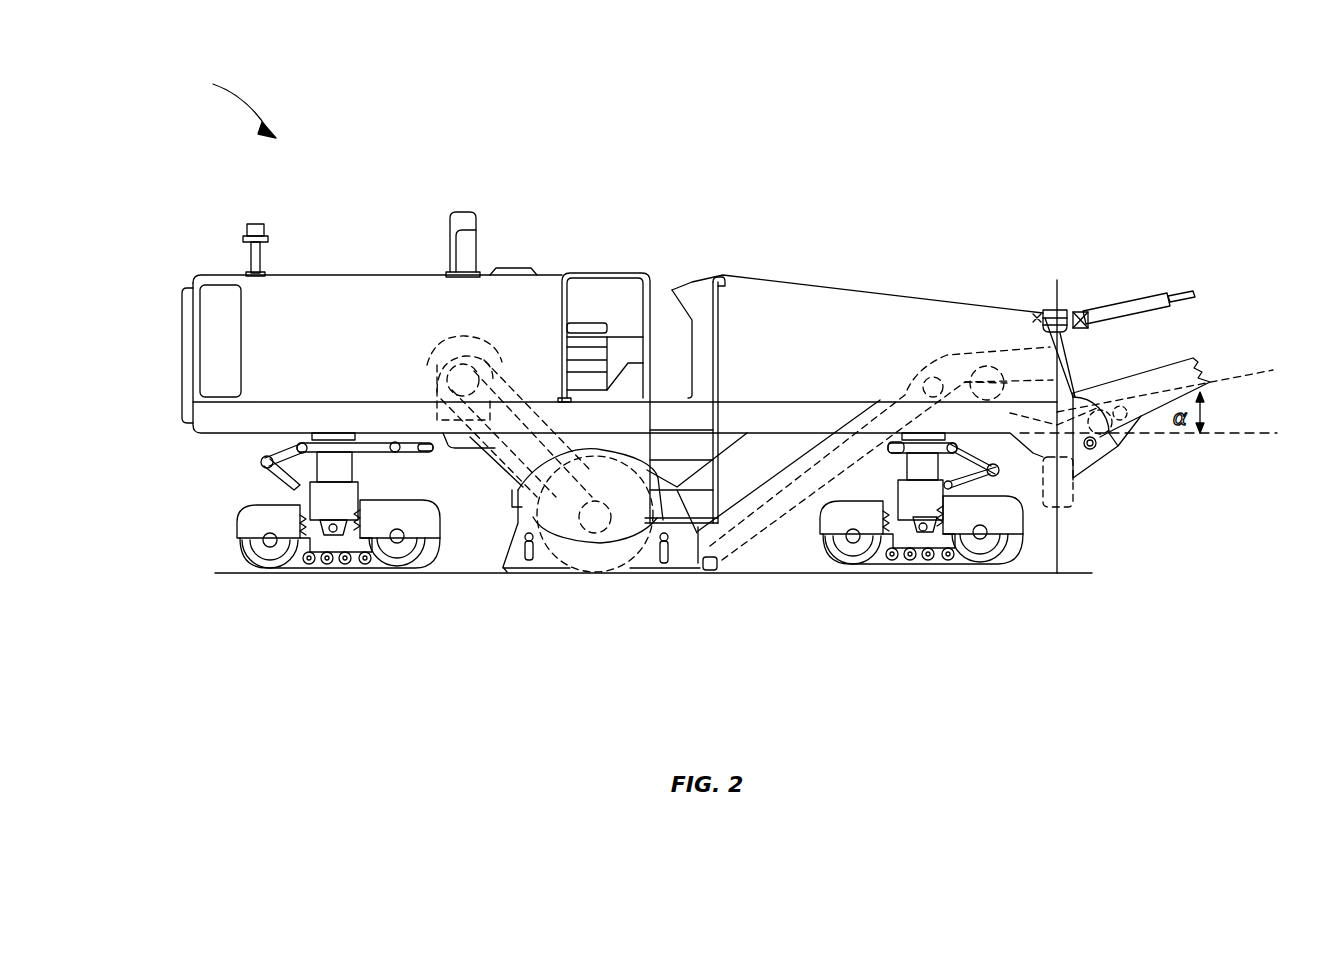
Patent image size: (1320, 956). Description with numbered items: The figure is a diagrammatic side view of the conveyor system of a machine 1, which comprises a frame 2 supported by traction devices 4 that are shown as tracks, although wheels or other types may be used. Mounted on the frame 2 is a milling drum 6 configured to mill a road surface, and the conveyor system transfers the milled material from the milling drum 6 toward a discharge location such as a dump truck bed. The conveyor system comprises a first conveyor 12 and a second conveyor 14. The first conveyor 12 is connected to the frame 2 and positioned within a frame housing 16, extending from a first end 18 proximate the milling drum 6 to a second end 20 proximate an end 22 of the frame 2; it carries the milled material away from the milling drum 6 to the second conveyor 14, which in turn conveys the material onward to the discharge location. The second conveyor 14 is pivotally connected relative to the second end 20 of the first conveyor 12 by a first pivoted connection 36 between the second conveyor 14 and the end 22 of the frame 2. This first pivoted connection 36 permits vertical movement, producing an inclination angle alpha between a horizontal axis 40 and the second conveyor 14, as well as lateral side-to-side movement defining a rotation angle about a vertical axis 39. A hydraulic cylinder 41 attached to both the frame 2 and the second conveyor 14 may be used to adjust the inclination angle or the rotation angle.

The machine 1 is at (231, 105).
The frame 2 is at (283, 418).
The traction devices 4 is at (993, 550).
The milling drum 6 is at (597, 573).
The first conveyor 12 is at (945, 355).
The second conveyor 14 is at (1147, 363).
The frame housing 16 is at (790, 318).
The first end 18 is at (712, 533).
The second end 20 is at (928, 420).
The end 22 is at (1040, 310).
The first pivoted connection 36 is at (1119, 447).
The vertical axis 39 is at (1060, 548).
The horizontal axis 40 is at (1252, 433).
The hydraulic cylinder 41 is at (1132, 300).